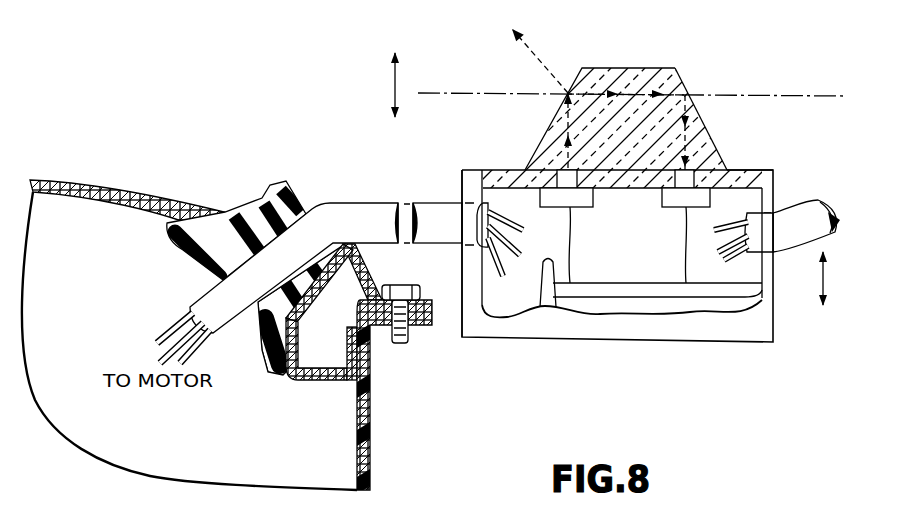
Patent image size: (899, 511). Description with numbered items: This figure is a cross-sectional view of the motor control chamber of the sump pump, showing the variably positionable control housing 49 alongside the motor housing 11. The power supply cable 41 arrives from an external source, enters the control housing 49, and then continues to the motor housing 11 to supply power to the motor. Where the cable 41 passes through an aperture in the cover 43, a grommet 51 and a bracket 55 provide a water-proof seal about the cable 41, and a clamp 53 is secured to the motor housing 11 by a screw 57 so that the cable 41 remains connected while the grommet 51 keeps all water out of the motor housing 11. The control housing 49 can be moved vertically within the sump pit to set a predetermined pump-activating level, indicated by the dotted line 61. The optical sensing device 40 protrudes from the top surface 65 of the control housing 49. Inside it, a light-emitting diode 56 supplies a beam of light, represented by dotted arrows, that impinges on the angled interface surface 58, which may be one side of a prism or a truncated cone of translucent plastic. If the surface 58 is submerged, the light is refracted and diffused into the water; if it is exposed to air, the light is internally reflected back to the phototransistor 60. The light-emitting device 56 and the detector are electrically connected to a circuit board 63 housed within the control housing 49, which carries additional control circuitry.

The motor housing 11 is at (374, 447).
The optical sensing device 40 is at (628, 67).
The power supply cable 41 is at (363, 203).
The cover 43 is at (68, 181).
The control housing 49 is at (694, 348).
The grommet 51 is at (211, 261).
The clamp 53 is at (293, 197).
The bracket 55 is at (325, 378).
The light-emitting diode 56 is at (580, 207).
The screw 57 is at (403, 293).
The angled interface surface 58 is at (683, 75).
The phototransistor 60 is at (675, 207).
The pump-activating level 61 is at (446, 93).
The circuit board 63 is at (735, 296).
The top surface 65 is at (470, 172).